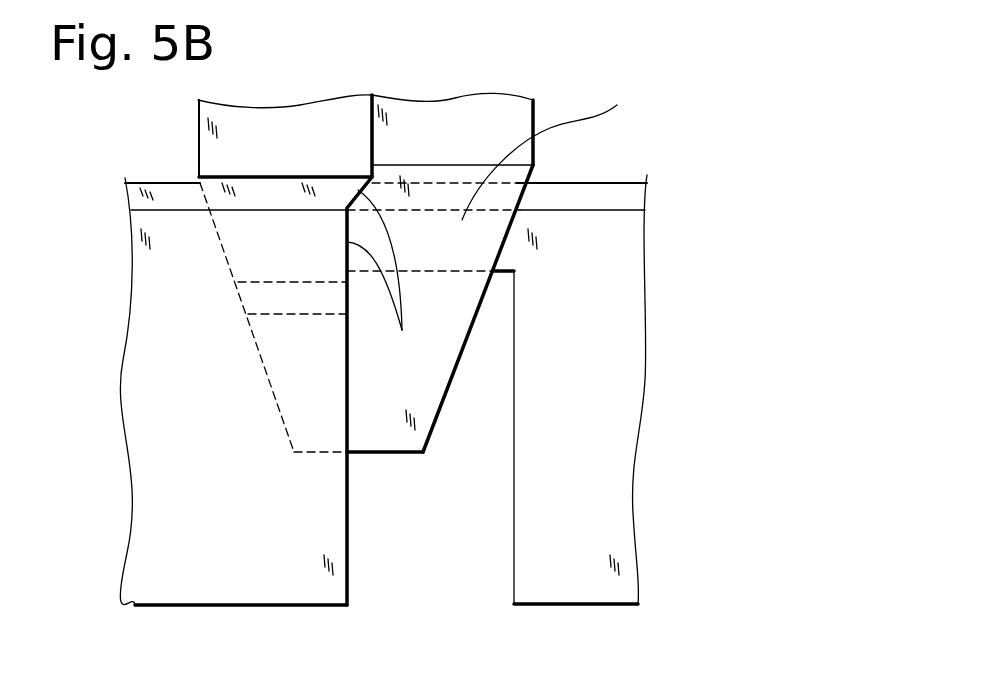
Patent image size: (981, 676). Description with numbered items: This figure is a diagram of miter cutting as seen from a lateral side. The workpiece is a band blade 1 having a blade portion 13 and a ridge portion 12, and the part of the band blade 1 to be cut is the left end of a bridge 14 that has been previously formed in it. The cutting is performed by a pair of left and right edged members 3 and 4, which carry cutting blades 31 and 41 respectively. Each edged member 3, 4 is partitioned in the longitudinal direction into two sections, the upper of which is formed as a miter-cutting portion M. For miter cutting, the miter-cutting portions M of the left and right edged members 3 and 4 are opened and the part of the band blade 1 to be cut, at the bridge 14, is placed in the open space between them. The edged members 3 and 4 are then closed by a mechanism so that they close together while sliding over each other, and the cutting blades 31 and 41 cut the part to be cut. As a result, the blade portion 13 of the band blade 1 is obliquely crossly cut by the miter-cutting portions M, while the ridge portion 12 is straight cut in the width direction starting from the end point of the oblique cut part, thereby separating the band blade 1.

The band blade 1 is at (647, 230).
The ridge portion 12 is at (630, 390).
The blade portion 13 is at (612, 188).
The bridge 14 is at (617, 104).
The edged member 3 is at (283, 103).
The cutting blade 31 is at (220, 245).
The edged member 4 is at (452, 92).
The cutting blade 41 is at (480, 308).
The miter-cutting portion M is at (386, 283).